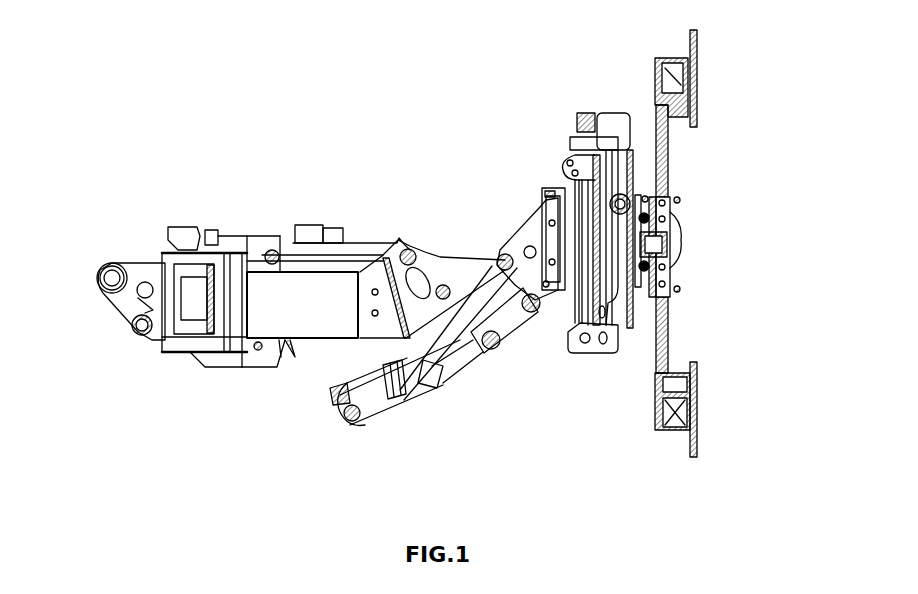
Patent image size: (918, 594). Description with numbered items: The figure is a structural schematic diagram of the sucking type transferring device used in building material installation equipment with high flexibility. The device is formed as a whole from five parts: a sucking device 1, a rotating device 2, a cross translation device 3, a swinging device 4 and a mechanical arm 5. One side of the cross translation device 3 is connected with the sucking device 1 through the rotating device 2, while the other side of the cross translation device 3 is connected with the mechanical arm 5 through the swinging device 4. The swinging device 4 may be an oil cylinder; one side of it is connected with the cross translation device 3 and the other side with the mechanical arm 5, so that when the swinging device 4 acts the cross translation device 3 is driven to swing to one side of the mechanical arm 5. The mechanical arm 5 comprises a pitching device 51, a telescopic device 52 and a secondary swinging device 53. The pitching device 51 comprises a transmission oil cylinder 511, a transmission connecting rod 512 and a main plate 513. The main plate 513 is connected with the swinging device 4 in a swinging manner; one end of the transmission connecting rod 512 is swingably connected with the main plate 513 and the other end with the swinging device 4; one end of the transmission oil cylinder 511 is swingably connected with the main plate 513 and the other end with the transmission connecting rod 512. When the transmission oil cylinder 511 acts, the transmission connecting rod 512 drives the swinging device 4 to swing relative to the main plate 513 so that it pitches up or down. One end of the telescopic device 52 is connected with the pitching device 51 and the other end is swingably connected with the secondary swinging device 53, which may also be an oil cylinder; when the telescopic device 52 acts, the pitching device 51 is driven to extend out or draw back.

The sucking device 1 is at (698, 390).
The rotating device 2 is at (680, 262).
The cross translation device 3 is at (613, 152).
The swinging device 4 is at (548, 192).
The mechanical arm 5 is at (368, 225).
The pitching device 51 is at (470, 275).
The transmission oil cylinder 511 is at (423, 385).
The transmission connecting rod 512 is at (508, 325).
The main plate 513 is at (333, 398).
The telescopic device 52 is at (330, 292).
The secondary swinging device 53 is at (140, 272).